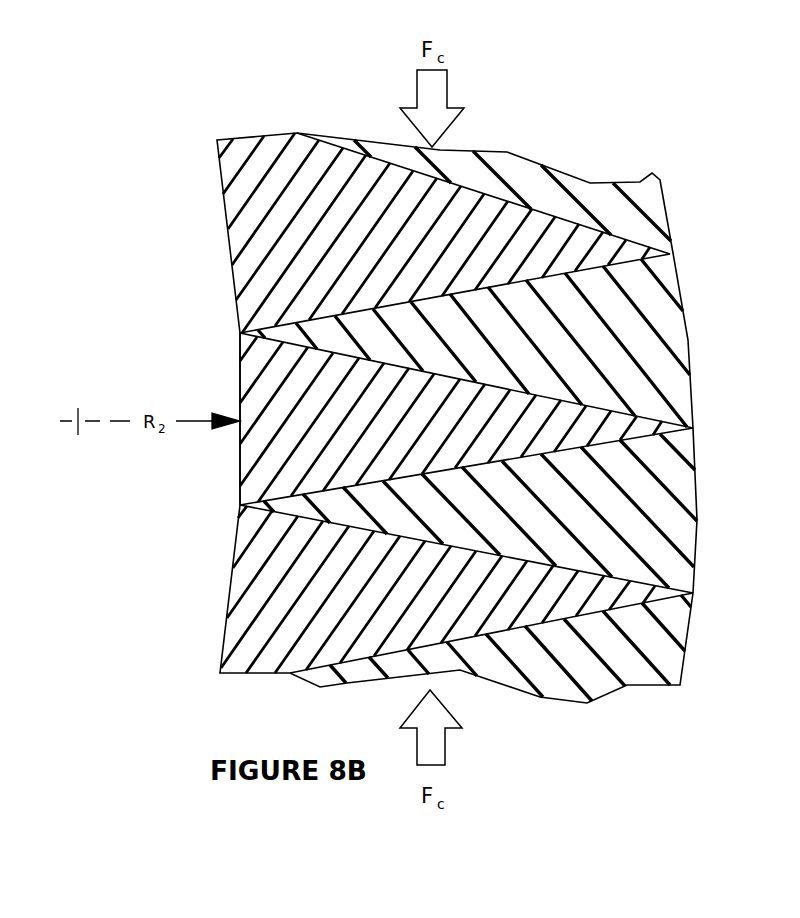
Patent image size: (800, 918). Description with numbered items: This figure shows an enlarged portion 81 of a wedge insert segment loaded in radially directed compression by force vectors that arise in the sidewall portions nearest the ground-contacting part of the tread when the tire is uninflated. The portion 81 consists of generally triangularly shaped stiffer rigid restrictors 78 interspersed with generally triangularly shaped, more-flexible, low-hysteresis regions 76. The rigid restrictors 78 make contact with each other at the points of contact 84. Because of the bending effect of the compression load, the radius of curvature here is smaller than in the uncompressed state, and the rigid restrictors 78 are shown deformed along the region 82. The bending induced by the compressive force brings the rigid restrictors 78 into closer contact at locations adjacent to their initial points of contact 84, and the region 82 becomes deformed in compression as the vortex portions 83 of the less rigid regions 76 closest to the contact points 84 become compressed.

The low-hysteresis region 76 is at (603, 330).
The rigid restrictor 78 is at (313, 258).
The portion 81 is at (692, 178).
The region 82 is at (300, 519).
The vortex portion 83 is at (485, 347).
The point of contact 84 is at (240, 333).